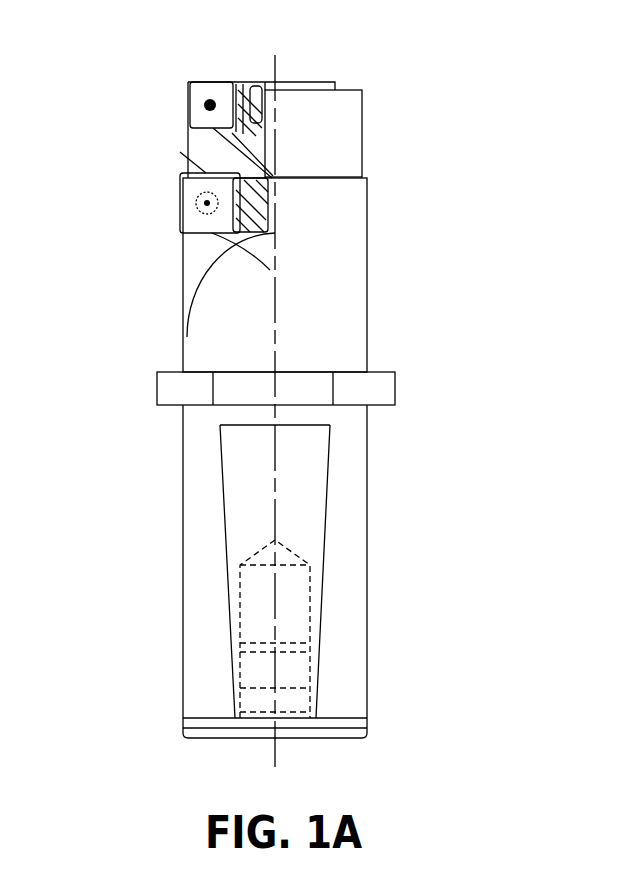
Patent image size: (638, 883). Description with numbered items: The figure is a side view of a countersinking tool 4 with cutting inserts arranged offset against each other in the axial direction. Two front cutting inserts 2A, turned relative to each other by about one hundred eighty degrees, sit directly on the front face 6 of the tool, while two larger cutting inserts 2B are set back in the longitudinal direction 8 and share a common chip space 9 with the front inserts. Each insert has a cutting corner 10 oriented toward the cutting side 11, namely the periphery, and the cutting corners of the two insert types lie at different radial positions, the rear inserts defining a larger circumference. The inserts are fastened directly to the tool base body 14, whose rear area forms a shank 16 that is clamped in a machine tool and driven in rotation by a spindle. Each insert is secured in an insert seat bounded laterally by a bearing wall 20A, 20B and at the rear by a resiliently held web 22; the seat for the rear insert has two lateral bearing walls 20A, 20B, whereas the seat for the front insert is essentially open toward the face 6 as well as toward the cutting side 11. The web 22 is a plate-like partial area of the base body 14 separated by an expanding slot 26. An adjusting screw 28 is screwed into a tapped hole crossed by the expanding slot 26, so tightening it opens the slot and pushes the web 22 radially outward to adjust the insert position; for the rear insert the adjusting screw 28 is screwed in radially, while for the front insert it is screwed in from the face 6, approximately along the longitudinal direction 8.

The countersinking tool 4 is at (505, 149).
The front face 6 is at (305, 82).
The longitudinal direction 8 is at (275, 371).
The chip space 9 is at (224, 279).
The cutting corner 10 is at (188, 86).
The cutting side 11 is at (178, 122).
The tool base body 14 is at (353, 292).
The shank 16 is at (352, 542).
The lateral bearing wall 20A is at (262, 266).
The lateral bearing wall 20B is at (188, 158).
The web 22 is at (231, 88).
The expanding slot 26 is at (262, 229).
The adjusting screw 28 is at (270, 180).
The front cutting insert 2A is at (203, 90).
The rear cutting insert 2B is at (206, 212).